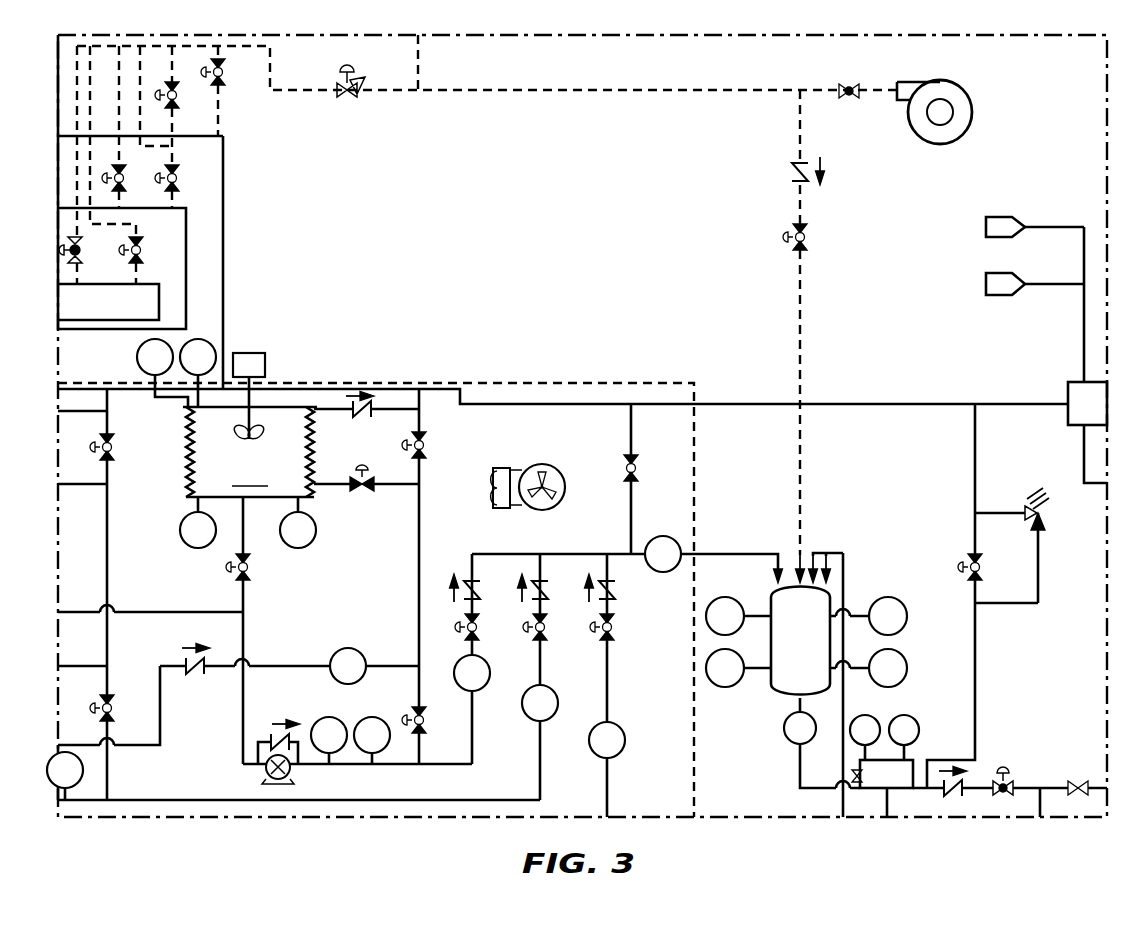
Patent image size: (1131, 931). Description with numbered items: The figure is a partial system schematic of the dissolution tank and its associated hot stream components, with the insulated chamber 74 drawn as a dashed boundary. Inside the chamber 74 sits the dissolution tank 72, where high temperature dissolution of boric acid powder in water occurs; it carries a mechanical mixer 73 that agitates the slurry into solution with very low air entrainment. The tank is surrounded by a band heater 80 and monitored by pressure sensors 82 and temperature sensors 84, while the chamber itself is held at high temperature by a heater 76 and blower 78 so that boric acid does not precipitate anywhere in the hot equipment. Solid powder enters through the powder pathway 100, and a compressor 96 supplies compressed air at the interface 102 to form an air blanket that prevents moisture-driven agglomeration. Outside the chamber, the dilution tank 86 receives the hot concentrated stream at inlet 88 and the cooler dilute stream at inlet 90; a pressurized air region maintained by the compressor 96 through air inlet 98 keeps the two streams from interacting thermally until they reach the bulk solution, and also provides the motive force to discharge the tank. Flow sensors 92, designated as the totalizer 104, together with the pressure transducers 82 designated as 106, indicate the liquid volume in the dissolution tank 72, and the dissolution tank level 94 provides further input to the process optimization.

The dissolution tank 72 is at (290, 408).
The mechanical mixer 73 is at (268, 365).
The insulated chamber 74 is at (585, 383).
The heater 76 is at (500, 468).
The blower 78 is at (544, 472).
The band heater 80 is at (190, 455).
The pressure sensor 82 is at (200, 553).
The temperature sensor 84 is at (137, 362).
The dilution tank 86 is at (778, 700).
The inlet 88 is at (757, 553).
The inlet 90 is at (836, 549).
The flow sensor 92 is at (346, 648).
The dissolution tank level 94 is at (727, 597).
The compressor 96 is at (965, 137).
The air inlet 98 is at (802, 548).
The powder pathway 100 is at (224, 232).
The interface 102 is at (220, 119).
The flow sensor totalizer 104 is at (366, 655).
The pressure transducer 106 is at (190, 549).